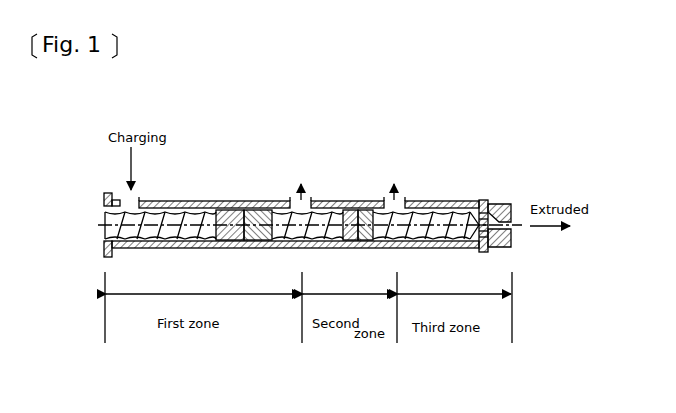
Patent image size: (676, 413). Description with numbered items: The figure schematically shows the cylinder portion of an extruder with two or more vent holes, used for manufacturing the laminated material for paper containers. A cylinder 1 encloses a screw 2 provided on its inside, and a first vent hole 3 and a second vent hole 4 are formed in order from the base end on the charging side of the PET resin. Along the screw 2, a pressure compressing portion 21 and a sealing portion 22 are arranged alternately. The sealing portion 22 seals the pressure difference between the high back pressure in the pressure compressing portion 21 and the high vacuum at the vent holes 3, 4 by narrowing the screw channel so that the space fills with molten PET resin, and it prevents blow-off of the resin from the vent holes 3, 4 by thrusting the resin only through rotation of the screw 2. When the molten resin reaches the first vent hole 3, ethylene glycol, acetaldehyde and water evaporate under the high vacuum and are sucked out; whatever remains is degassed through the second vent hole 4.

The cylinder 1 is at (104, 244).
The screw 2 is at (104, 214).
The pressure compressing portion 21 is at (172, 212).
The sealing portion 22 is at (239, 212).
The first vent hole 3 is at (305, 203).
The second vent hole 4 is at (399, 203).